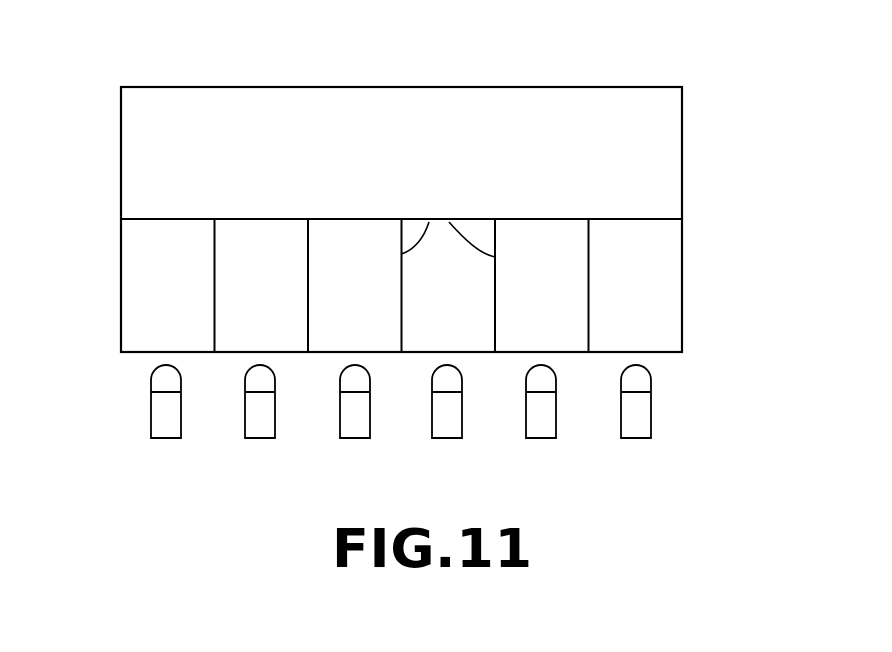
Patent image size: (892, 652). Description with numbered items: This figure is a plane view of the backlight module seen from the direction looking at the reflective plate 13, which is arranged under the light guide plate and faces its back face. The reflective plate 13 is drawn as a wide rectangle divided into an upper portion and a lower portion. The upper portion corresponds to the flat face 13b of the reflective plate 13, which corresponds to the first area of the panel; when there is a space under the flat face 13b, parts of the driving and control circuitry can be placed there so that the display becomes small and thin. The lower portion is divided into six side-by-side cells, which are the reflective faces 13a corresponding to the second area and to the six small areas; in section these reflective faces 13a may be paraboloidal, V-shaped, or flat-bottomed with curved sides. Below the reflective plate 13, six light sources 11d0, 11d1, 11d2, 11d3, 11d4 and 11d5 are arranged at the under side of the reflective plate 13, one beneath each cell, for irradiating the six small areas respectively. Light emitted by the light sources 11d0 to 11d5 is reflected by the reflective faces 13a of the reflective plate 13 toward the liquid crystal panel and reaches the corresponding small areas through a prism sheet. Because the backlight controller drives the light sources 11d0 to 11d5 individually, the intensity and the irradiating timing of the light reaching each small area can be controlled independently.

The reflective plate 13 is at (622, 88).
The reflective faces 13a is at (647, 279).
The flat face 13b is at (429, 222).
The light source 11d0 is at (170, 418).
The light source 11d1 is at (265, 418).
The light source 11d2 is at (359, 418).
The light source 11d3 is at (451, 418).
The light source 11d4 is at (545, 418).
The light source 11d5 is at (640, 418).